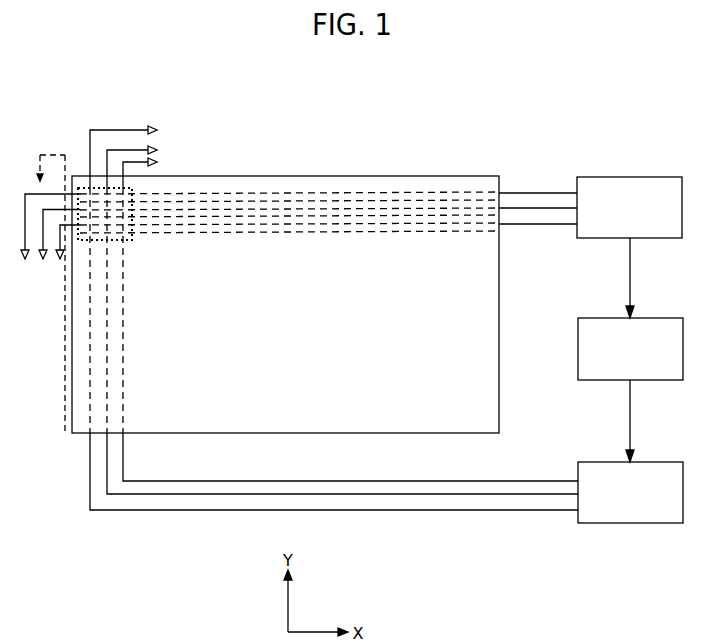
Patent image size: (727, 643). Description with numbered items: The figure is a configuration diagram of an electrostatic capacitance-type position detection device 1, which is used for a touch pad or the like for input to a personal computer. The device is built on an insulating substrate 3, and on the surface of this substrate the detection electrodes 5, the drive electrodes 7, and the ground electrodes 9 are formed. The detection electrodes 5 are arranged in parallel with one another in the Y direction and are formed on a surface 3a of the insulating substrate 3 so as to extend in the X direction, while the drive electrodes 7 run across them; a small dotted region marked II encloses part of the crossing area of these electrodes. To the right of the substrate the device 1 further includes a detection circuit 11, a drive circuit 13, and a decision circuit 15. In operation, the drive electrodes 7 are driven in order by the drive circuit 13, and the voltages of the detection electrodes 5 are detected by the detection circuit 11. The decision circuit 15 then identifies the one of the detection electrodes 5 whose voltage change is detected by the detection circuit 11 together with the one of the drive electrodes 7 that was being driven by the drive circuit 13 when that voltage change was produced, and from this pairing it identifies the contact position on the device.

The electrostatic capacitance-type position detection device 1 is at (352, 69).
The insulating substrate 3 is at (345, 175).
The surface of the insulating substrate 3a is at (400, 186).
The detection electrodes 5 is at (244, 192).
The drive electrodes 7 is at (89, 454).
The ground electrodes 9 is at (65, 290).
The detection circuit 11 is at (650, 177).
The drive circuit 13 is at (652, 462).
The decision circuit 15 is at (652, 318).
The section II region II is at (130, 237).